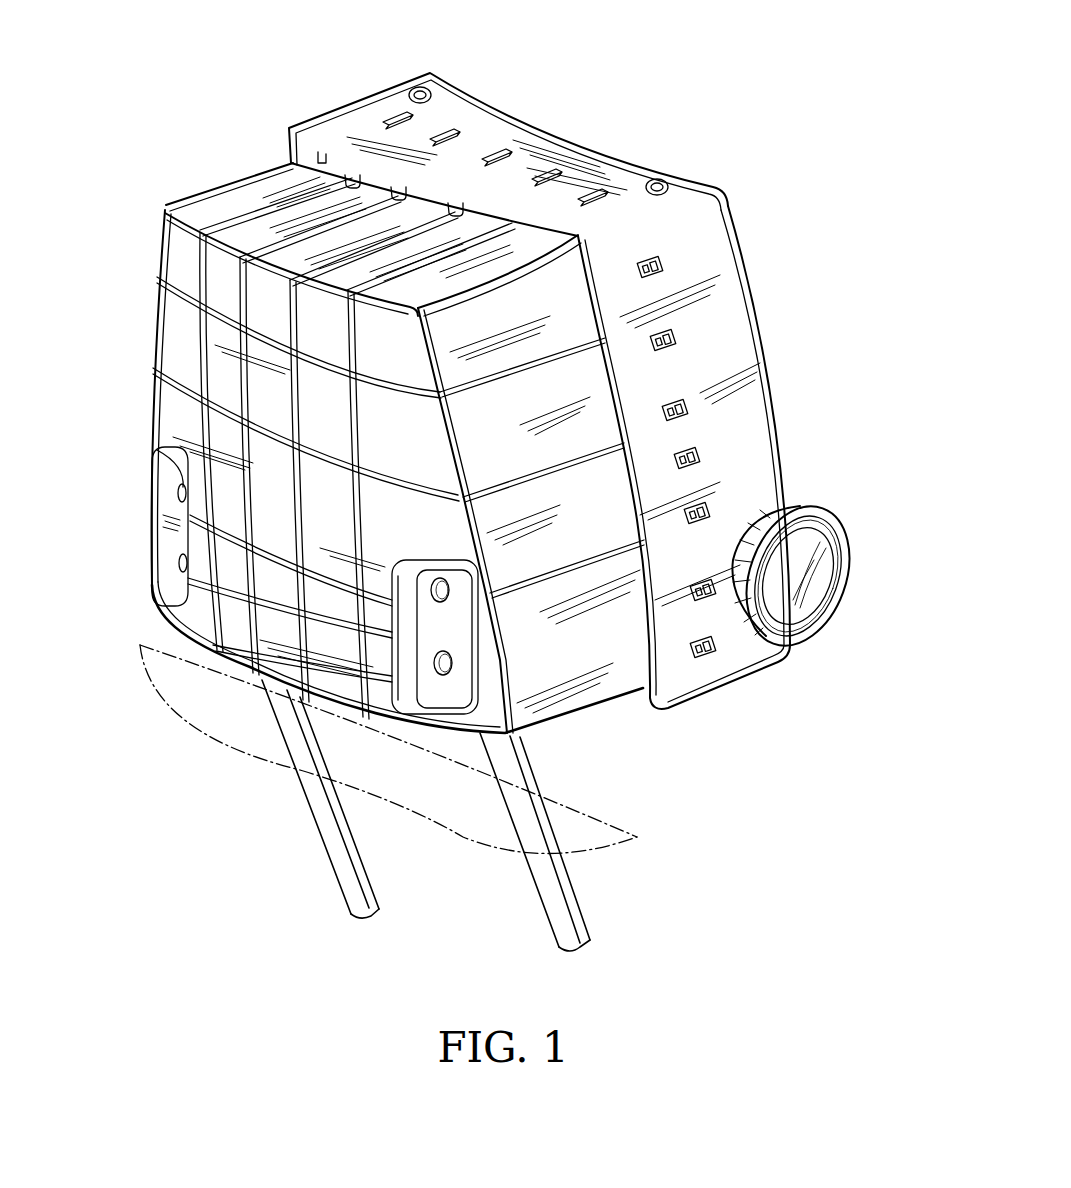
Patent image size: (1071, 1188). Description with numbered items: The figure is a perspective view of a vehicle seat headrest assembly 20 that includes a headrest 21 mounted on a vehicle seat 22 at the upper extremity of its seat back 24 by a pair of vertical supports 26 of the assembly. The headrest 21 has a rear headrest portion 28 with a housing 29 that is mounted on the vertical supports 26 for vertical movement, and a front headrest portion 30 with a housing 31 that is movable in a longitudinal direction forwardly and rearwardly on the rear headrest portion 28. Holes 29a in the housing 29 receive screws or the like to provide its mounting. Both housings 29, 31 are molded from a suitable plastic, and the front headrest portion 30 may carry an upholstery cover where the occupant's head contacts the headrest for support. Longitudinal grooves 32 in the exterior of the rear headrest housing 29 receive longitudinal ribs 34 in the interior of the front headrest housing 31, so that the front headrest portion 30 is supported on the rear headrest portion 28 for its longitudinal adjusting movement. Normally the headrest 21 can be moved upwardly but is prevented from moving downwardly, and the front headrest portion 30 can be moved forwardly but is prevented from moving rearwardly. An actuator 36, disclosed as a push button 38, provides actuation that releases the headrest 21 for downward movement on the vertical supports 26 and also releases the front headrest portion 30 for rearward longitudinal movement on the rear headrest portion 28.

The vehicle seat headrest assembly 20 is at (144, 133).
The headrest 21 is at (502, 82).
The vehicle seat 22 is at (115, 686).
The seat back 24 is at (172, 728).
The vertical supports 26 is at (316, 833).
The rear headrest portion 28 is at (155, 241).
The housing 29 is at (147, 325).
The holes 29a is at (180, 558).
The front headrest portion 30 is at (735, 196).
The housing 31 is at (740, 292).
The longitudinal grooves 32 is at (307, 230).
The longitudinal ribs 34 is at (398, 188).
The actuator 36 is at (862, 546).
The push button 38 is at (822, 592).